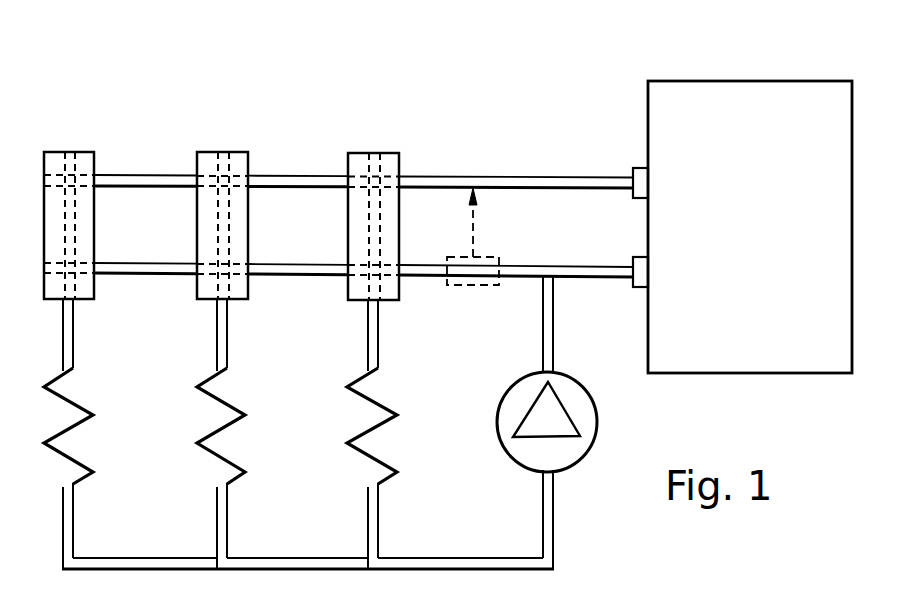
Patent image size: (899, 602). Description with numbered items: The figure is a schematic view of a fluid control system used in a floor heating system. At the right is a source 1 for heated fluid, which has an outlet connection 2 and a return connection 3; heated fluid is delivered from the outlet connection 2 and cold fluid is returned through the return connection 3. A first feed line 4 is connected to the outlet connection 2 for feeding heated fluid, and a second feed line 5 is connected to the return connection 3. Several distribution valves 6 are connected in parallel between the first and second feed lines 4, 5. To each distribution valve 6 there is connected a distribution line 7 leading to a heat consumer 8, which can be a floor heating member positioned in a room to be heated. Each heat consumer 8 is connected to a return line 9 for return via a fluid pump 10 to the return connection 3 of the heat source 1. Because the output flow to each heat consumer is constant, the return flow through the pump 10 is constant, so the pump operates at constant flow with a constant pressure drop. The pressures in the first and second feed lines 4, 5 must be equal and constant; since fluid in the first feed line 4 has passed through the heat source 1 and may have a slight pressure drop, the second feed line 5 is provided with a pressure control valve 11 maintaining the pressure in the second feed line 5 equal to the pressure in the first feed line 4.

The source for heated fluid 1 is at (714, 81).
The outlet connection 2 is at (633, 168).
The return connection 3 is at (633, 257).
The first feed line 4 is at (433, 176).
The second feed line 5 is at (425, 276).
The distribution valve 6 is at (348, 168).
The distribution line 7 is at (368, 343).
The heat consumer 8 is at (363, 433).
The return line 9 is at (366, 518).
The fluid pump 10 is at (580, 460).
The pressure control valve 11 is at (495, 255).